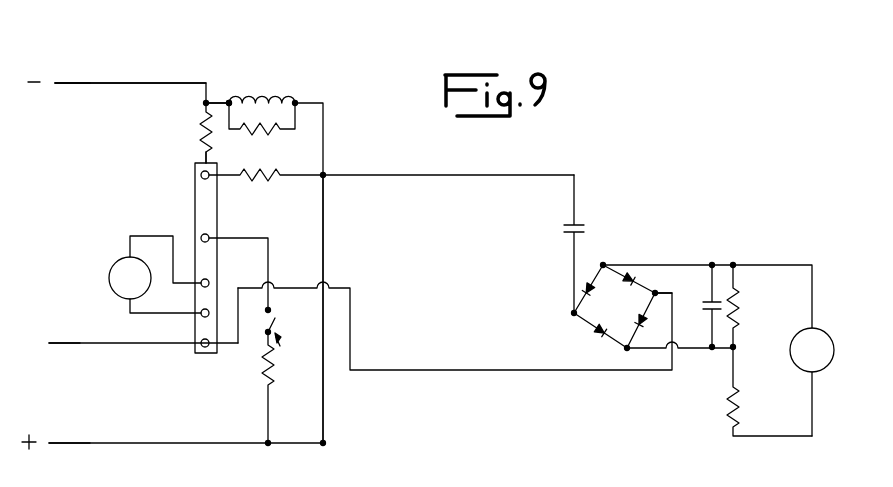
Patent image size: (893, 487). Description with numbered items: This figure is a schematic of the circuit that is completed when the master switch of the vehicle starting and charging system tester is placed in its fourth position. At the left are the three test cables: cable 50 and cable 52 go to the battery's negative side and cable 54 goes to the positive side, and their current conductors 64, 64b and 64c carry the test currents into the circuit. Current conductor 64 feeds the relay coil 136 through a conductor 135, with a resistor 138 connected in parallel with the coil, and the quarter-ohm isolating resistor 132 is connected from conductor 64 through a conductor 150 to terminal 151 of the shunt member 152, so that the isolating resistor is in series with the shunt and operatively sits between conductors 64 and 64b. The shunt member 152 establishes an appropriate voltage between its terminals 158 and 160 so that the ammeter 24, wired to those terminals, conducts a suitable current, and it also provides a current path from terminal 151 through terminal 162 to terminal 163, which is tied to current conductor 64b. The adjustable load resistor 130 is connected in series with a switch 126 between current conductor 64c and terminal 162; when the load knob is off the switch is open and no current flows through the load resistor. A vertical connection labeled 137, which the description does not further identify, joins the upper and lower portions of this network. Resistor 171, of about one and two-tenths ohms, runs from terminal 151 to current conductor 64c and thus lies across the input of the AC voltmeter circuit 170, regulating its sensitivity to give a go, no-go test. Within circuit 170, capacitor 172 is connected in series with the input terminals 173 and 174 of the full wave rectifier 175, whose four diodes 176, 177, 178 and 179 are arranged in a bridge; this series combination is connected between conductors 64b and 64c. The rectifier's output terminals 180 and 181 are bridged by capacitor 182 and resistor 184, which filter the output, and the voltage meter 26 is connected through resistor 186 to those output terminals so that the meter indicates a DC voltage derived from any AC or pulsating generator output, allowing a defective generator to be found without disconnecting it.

The ammeter 24 is at (108, 280).
The voltage meter 26 is at (826, 335).
The cable 50 is at (72, 83).
The cable 52 is at (48, 343).
The cable 54 is at (61, 443).
The current conductor 64 is at (129, 83).
The current conductor 64b is at (108, 343).
The current conductor 64c is at (146, 426).
The switch 126 is at (276, 321).
The adjustable load resistor 130 is at (262, 360).
The isolating resistor 132 is at (202, 126).
The conductor 135 is at (216, 103).
The coil 136 is at (262, 100).
The conductor 137 is at (323, 228).
The resistor 138 is at (280, 132).
The conductor 150 is at (202, 156).
The terminal 151 is at (196, 176).
The shunt member 152 is at (191, 196).
The terminal 158 is at (212, 283).
The terminal 160 is at (200, 310).
The terminal 162 is at (200, 235).
The terminal 163 is at (200, 348).
The AC voltmeter circuit 170 is at (425, 268).
The resistor 171 is at (254, 182).
The capacitor 172 is at (560, 232).
The input terminal 173 is at (572, 313).
The input terminal 174 is at (657, 300).
The full wave rectifier 175 is at (545, 333).
The diode 176 is at (584, 293).
The diode 177 is at (596, 335).
The diode 178 is at (636, 271).
The diode 179 is at (646, 329).
The output terminal 180 is at (603, 265).
The output terminal 181 is at (627, 349).
The capacitor 182 is at (700, 302).
The resistor 184 is at (738, 301).
The resistor 186 is at (726, 398).